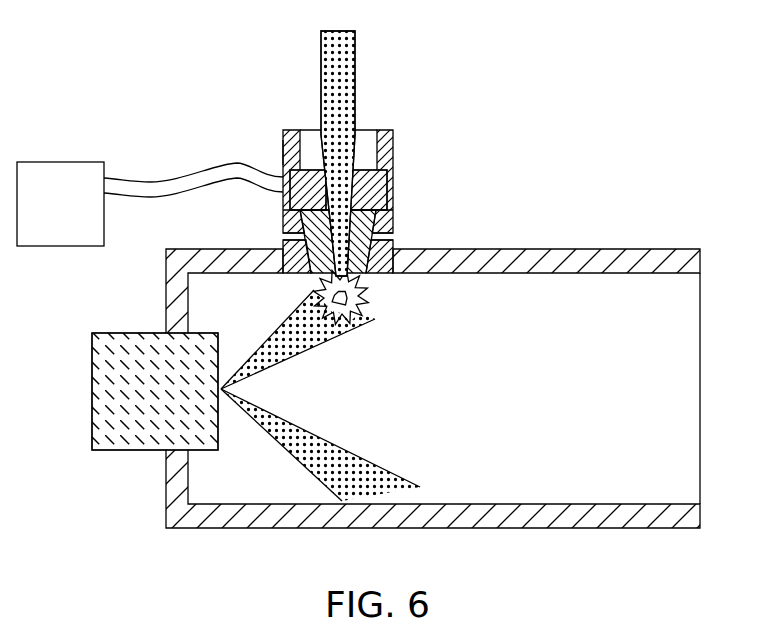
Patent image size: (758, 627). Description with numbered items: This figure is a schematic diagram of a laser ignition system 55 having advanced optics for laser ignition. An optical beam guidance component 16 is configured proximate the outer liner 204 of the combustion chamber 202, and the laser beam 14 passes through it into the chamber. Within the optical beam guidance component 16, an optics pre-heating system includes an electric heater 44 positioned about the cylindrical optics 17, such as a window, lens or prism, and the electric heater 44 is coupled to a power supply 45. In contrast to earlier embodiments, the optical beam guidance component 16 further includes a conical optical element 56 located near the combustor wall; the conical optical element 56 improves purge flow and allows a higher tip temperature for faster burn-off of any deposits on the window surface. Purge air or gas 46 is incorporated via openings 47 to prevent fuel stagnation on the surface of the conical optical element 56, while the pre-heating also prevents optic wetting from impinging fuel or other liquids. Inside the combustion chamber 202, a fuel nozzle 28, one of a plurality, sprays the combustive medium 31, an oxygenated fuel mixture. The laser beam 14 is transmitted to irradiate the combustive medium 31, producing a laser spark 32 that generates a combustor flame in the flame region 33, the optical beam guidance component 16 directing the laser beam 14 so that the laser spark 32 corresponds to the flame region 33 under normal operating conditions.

The laser beam 14 is at (348, 53).
The optical beam guidance component 16 is at (425, 188).
The cylindrical optics 17 is at (388, 143).
The fuel nozzle 28 is at (92, 386).
The combustive medium 31 is at (373, 468).
The laser spark 32 is at (352, 329).
The flame region 33 is at (337, 350).
The electric heater 44 is at (278, 152).
The power supply 45 is at (60, 162).
The purge air or gas 46 is at (294, 236).
The openings 47 is at (372, 237).
The laser ignition system 55 is at (557, 118).
The conical optical element 56 is at (381, 220).
The combustion chamber 202 is at (615, 391).
The outer liner 204 is at (600, 249).